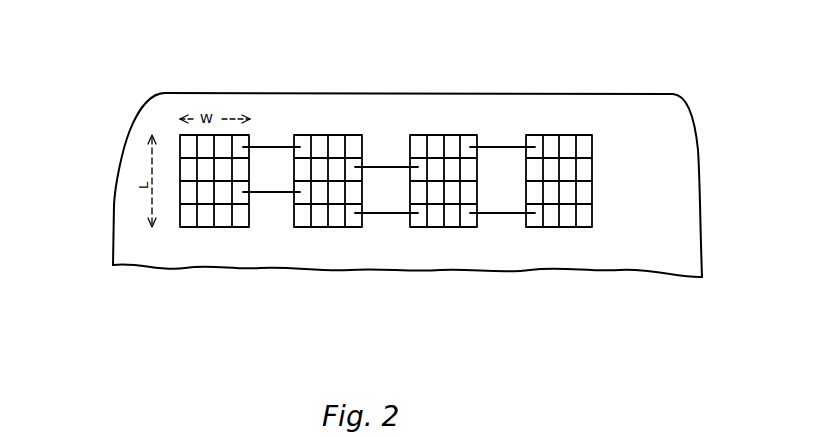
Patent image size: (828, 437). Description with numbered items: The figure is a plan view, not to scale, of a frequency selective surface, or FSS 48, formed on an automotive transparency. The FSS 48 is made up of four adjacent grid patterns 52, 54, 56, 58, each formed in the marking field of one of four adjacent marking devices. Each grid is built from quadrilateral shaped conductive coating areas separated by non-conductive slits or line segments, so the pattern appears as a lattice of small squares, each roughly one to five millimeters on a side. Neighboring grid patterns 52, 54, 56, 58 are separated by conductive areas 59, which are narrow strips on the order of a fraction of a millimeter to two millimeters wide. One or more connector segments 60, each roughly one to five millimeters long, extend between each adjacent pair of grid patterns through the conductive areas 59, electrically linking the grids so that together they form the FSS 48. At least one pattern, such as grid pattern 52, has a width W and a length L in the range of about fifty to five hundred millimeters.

The frequency selective surface (FSS) 48 is at (228, 80).
The grid pattern 52 is at (190, 228).
The grid pattern 54 is at (327, 228).
The grid pattern 56 is at (440, 228).
The grid pattern 58 is at (560, 228).
The conductive areas 59 is at (270, 223).
The connector segments 60 is at (275, 147).